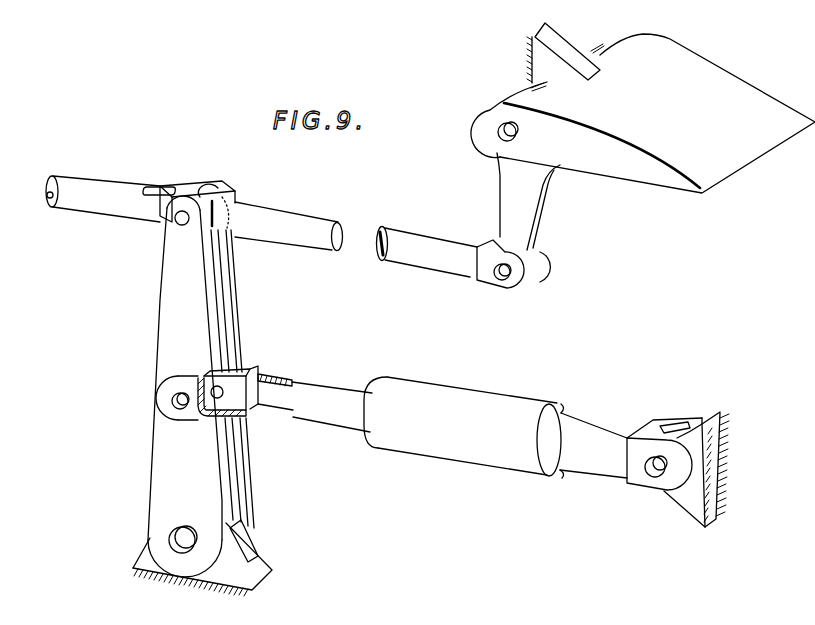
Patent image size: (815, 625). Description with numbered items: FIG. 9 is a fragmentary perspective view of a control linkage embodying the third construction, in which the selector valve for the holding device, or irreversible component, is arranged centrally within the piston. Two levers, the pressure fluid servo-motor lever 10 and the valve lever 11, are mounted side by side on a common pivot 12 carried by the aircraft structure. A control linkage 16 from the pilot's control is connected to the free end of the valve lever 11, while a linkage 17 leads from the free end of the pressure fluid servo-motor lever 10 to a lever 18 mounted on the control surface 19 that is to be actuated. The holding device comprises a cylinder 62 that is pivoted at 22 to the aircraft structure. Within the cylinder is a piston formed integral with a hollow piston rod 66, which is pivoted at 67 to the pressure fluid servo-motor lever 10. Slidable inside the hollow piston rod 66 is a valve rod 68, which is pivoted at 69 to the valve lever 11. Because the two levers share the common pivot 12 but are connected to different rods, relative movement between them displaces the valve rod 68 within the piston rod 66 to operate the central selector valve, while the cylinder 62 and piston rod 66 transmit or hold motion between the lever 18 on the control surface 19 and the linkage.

The pressure fluid servo-motor lever 10 is at (207, 322).
The valve lever 11 is at (222, 293).
The common pivot 12 is at (177, 540).
The control linkage 16 is at (126, 192).
The linkage 17 is at (380, 232).
The lever 18 is at (528, 193).
The control surface 19 is at (598, 160).
The pivot 22 is at (652, 466).
The cylinder 62 is at (458, 396).
The hollow piston rod 66 is at (329, 398).
The pivot 67 is at (176, 399).
The valve rod 68 is at (268, 388).
The pivot 69 is at (208, 389).